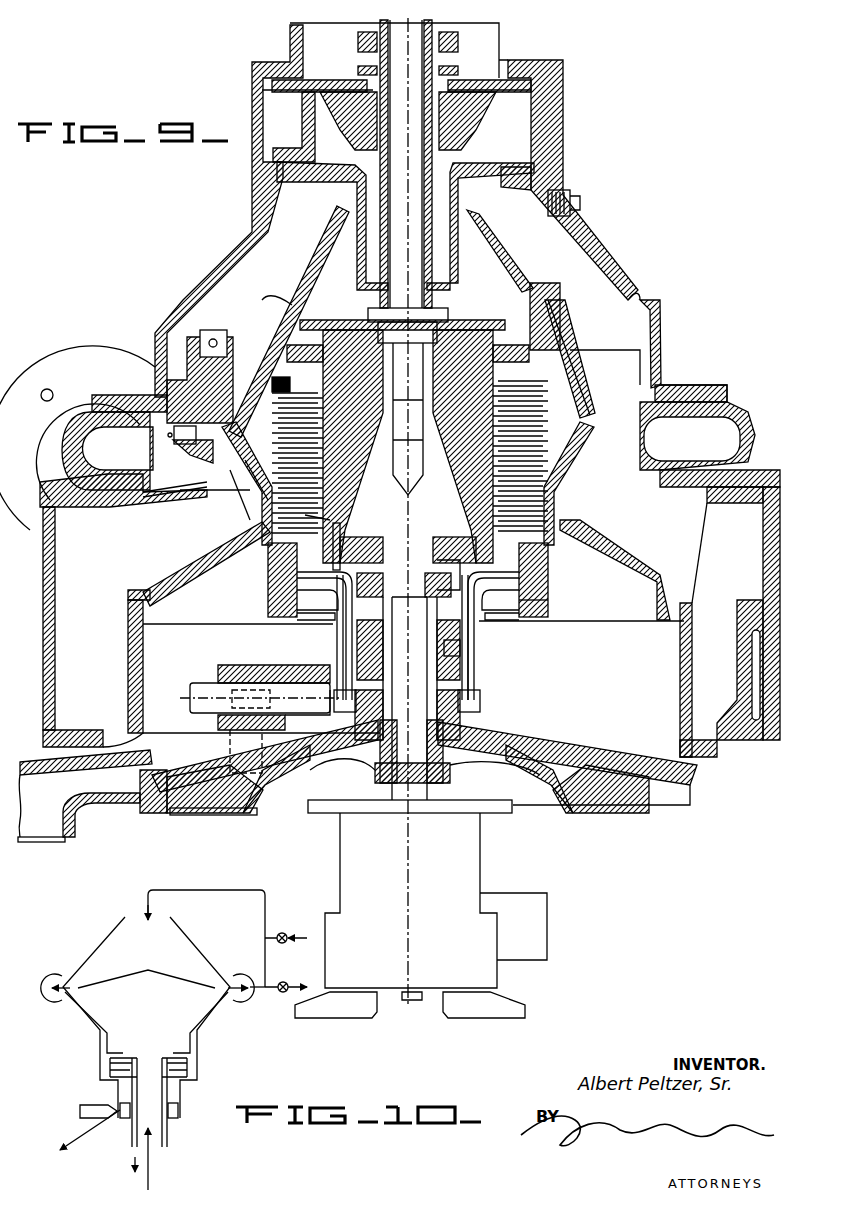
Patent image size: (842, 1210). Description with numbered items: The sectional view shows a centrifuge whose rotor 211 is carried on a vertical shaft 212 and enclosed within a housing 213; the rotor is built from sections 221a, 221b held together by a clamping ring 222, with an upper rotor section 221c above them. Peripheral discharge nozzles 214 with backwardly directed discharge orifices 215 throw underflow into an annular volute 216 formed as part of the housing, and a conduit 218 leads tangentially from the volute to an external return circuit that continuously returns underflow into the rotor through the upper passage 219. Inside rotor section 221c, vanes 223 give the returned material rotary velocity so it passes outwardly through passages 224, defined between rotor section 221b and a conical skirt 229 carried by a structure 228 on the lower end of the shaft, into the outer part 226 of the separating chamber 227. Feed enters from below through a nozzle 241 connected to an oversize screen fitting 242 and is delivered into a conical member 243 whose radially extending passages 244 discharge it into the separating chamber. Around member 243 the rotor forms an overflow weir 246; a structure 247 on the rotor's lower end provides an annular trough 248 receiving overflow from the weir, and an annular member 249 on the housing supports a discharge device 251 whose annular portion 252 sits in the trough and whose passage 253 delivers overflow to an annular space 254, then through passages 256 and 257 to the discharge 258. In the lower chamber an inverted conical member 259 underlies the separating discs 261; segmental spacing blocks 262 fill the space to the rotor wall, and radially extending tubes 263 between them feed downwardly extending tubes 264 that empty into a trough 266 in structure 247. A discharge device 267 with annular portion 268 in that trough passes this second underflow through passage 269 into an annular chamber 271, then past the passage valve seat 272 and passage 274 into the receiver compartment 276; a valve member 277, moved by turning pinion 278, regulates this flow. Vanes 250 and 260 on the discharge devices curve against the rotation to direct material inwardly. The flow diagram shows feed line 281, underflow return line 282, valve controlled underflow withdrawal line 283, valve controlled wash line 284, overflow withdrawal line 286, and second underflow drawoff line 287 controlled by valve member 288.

In FIG. 9, the rotor 211 is at (556, 297).
In FIG. 9, the vertical shaft 212 is at (441, 163).
In FIG. 9, the housing 213 is at (737, 408).
In FIG. 9, the peripheral discharge nozzles 214 is at (173, 445).
In FIG. 9, the discharge orifices 215 is at (172, 435).
In FIG. 9, the annular volute 216 is at (725, 420).
In FIG. 9, the conduit 218 is at (80, 395).
In FIG. 9, the upper passage 219 is at (443, 202).
In FIG. 10, the upper passage 219 is at (160, 915).
In FIG. 9, the rotor section 221a is at (655, 365).
In FIG. 9, the rotor section 221b is at (560, 320).
In FIG. 9, the rotor section 221c is at (509, 250).
In FIG. 9, the clamping ring 222 is at (645, 308).
In FIG. 9, the vanes 223 is at (325, 253).
In FIG. 9, the passages 224 is at (293, 335).
In FIG. 9, the outer part of separating chamber 226 is at (614, 435).
In FIG. 9, the separating chamber 227 is at (232, 455).
In FIG. 9, the structure 228 is at (521, 300).
In FIG. 9, the conical shaped skirt 229 is at (564, 407).
In FIG. 9, the nozzle 241 is at (402, 600).
In FIG. 9, the oversize screen fitting 242 is at (483, 858).
In FIG. 9, the conical shaped member 243 is at (340, 565).
In FIG. 9, the radially extending passages 244 is at (300, 312).
In FIG. 9, the overflow weir 246 is at (330, 575).
In FIG. 9, the structure 247 is at (548, 592).
In FIG. 9, the annular trough 248 is at (518, 577).
In FIG. 9, the annular member 249 is at (457, 628).
In FIG. 9, the vanes 250 is at (350, 560).
In FIG. 9, the discharge device 251 is at (440, 580).
In FIG. 9, the annular portion 252 is at (325, 580).
In FIG. 9, the passage 253 is at (353, 627).
In FIG. 9, the annular space 254 is at (457, 647).
In FIG. 9, the passage 256 is at (383, 667).
In FIG. 9, the passage 257 is at (207, 780).
In FIG. 9, the discharge 258 is at (192, 820).
In FIG. 9, the inverted conical shaped member 259 is at (313, 517).
In FIG. 9, the vanes 260 is at (370, 585).
In FIG. 9, the separating discs 261 is at (541, 440).
In FIG. 9, the segmental spacing blocks 262 is at (255, 445).
In FIG. 9, the radially extending tubes 263 is at (213, 487).
In FIG. 9, the downwardly extending tubes 264 is at (551, 543).
In FIG. 9, the trough 266 is at (290, 609).
In FIG. 9, the discharge device 267 is at (333, 640).
In FIG. 9, the annular portion 268 is at (503, 617).
In FIG. 9, the passage 269 is at (340, 655).
In FIG. 9, the annular chamber 271 is at (470, 705).
In FIG. 9, the passage valve seat 272 is at (333, 710).
In FIG. 9, the passage 274 is at (83, 782).
In FIG. 9, the receiver compartment 276 is at (28, 843).
In FIG. 9, the valve member 277 is at (200, 687).
In FIG. 9, the pinion 278 is at (250, 693).
In FIG. 10, the line 281 is at (153, 1167).
In FIG. 10, the line 282 is at (218, 892).
In FIG. 10, the valve controlled line 283 is at (275, 984).
In FIG. 10, the valve controlled line 284 is at (272, 936).
In FIG. 10, the line 286 is at (133, 1158).
In FIG. 10, the line 287 is at (85, 1138).
In FIG. 10, the valve member 288 is at (88, 1106).